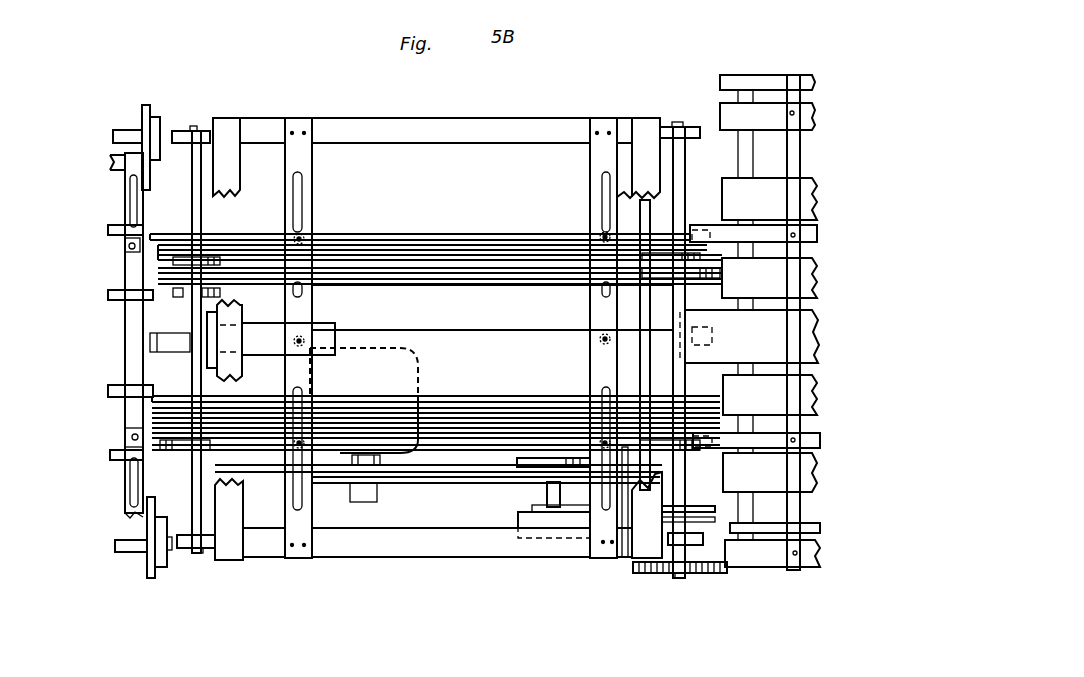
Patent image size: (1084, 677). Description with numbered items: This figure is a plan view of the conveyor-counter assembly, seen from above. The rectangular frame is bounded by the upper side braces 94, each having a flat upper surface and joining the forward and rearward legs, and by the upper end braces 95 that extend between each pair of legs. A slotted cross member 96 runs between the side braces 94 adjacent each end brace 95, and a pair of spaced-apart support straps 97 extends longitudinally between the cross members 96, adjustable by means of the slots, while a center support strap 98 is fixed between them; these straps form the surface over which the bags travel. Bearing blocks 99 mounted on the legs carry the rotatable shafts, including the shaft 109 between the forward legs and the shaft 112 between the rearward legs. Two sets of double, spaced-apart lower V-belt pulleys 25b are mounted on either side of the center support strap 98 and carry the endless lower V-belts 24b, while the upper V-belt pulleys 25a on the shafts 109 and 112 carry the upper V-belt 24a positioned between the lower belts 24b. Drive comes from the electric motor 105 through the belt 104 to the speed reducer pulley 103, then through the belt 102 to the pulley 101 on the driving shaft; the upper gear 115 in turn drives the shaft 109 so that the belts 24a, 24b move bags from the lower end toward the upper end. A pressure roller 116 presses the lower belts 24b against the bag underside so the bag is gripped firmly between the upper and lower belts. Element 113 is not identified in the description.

The upper side brace 94 is at (500, 128).
The upper end brace 95 is at (228, 130).
The slotted cross member 96 is at (312, 156).
The support strap 97 is at (410, 240).
The center support strap 98 is at (479, 328).
The bearing block 99 is at (197, 128).
The pulley 101 is at (690, 505).
The belt 102 is at (516, 534).
The speed reducer pulley 103 is at (525, 484).
The belt 104 is at (448, 482).
The electric motor 105 is at (382, 383).
The shaft 109 is at (688, 358).
The shaft 112 is at (190, 466).
The block 113 is at (257, 400).
The upper gear 115 is at (660, 576).
The pressure roller 116 is at (643, 297).
The upper V-belt 24a is at (340, 250).
The lower V-belt 24b is at (485, 250).
The upper V-belt pulley 25a is at (158, 266).
The lower V-belt pulley 25b is at (160, 256).